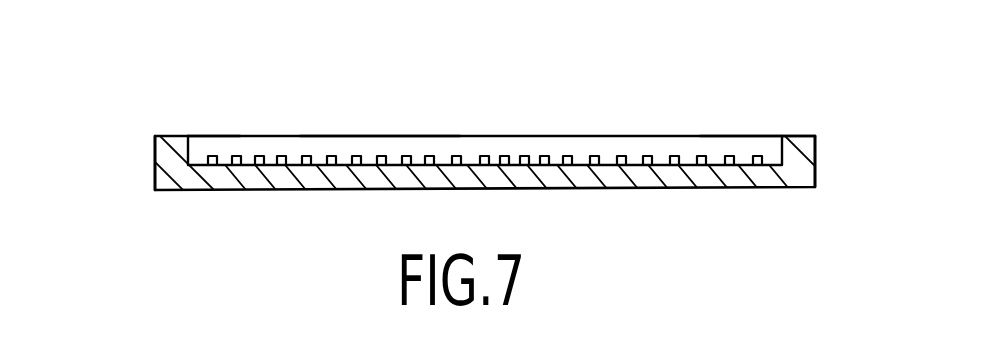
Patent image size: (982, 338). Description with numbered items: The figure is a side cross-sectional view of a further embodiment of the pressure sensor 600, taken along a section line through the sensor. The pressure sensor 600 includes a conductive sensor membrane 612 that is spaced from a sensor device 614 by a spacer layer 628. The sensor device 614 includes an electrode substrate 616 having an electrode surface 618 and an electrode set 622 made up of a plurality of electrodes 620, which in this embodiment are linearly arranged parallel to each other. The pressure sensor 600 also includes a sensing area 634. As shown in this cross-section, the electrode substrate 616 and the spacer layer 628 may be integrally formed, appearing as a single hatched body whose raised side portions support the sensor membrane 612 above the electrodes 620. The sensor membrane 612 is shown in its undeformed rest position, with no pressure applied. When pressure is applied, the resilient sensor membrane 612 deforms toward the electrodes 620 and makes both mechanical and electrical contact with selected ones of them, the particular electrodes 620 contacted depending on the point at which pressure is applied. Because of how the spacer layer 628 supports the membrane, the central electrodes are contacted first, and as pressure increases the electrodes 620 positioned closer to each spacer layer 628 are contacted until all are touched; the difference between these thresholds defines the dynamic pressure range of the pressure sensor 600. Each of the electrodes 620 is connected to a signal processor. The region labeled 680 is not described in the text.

The pressure sensor 600 is at (682, 60).
The sensor membrane 612 is at (760, 136).
The sensor device 614 is at (815, 162).
The electrode substrate 616 is at (250, 182).
The electrode surface 618 is at (264, 162).
The electrodes 620 is at (485, 156).
The electrode set 622 is at (383, 136).
The spacer layer 628 is at (165, 161).
The sensing area 634 is at (210, 136).
The cavity region 680 is at (782, 145).